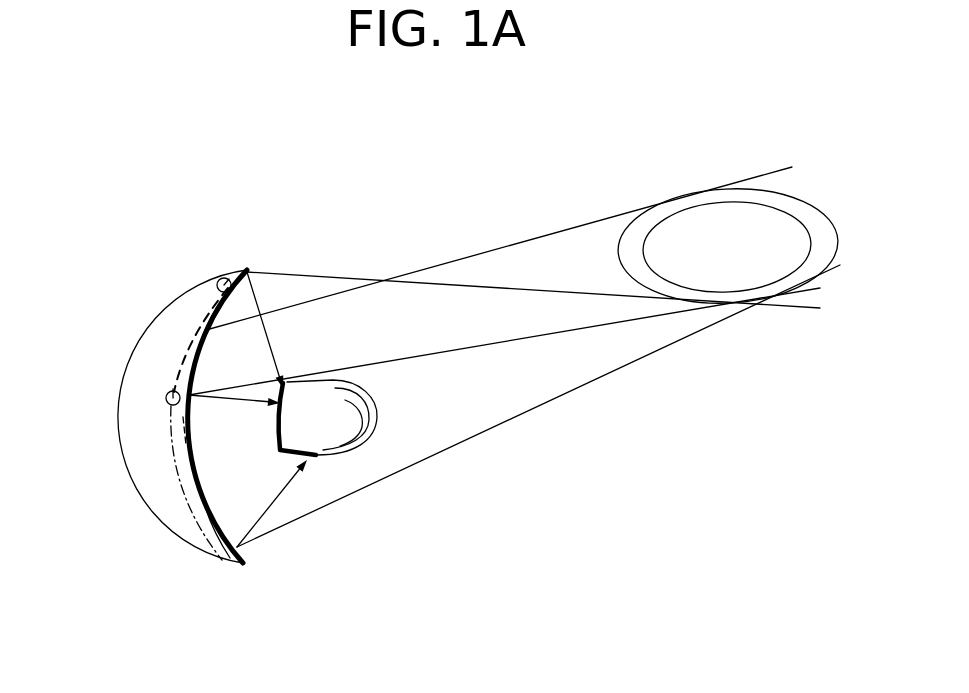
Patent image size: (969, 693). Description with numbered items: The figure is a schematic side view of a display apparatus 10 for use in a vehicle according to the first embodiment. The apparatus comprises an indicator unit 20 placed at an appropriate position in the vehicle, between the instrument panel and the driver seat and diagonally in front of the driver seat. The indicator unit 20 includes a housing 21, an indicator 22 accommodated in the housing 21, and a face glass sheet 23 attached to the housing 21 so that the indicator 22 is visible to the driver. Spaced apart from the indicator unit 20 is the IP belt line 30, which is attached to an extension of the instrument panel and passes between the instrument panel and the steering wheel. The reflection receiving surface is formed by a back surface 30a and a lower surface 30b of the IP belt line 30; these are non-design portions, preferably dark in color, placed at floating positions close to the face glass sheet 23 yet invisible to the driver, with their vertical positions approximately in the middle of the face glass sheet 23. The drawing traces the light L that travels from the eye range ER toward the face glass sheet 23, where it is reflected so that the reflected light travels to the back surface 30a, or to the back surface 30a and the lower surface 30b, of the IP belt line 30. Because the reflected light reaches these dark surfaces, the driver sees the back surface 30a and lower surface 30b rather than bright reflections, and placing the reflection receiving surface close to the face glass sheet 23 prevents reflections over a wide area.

The display apparatus 10 is at (481, 131).
The indicator unit 20 is at (200, 283).
The housing 21 is at (132, 344).
The indicator 22 is at (185, 345).
The face glass sheet 23 is at (202, 493).
The IP belt line 30 is at (352, 493).
The back surface 30a is at (278, 407).
The lower surface 30b is at (292, 457).
The light L is at (500, 247).
The eye range ER is at (717, 223).